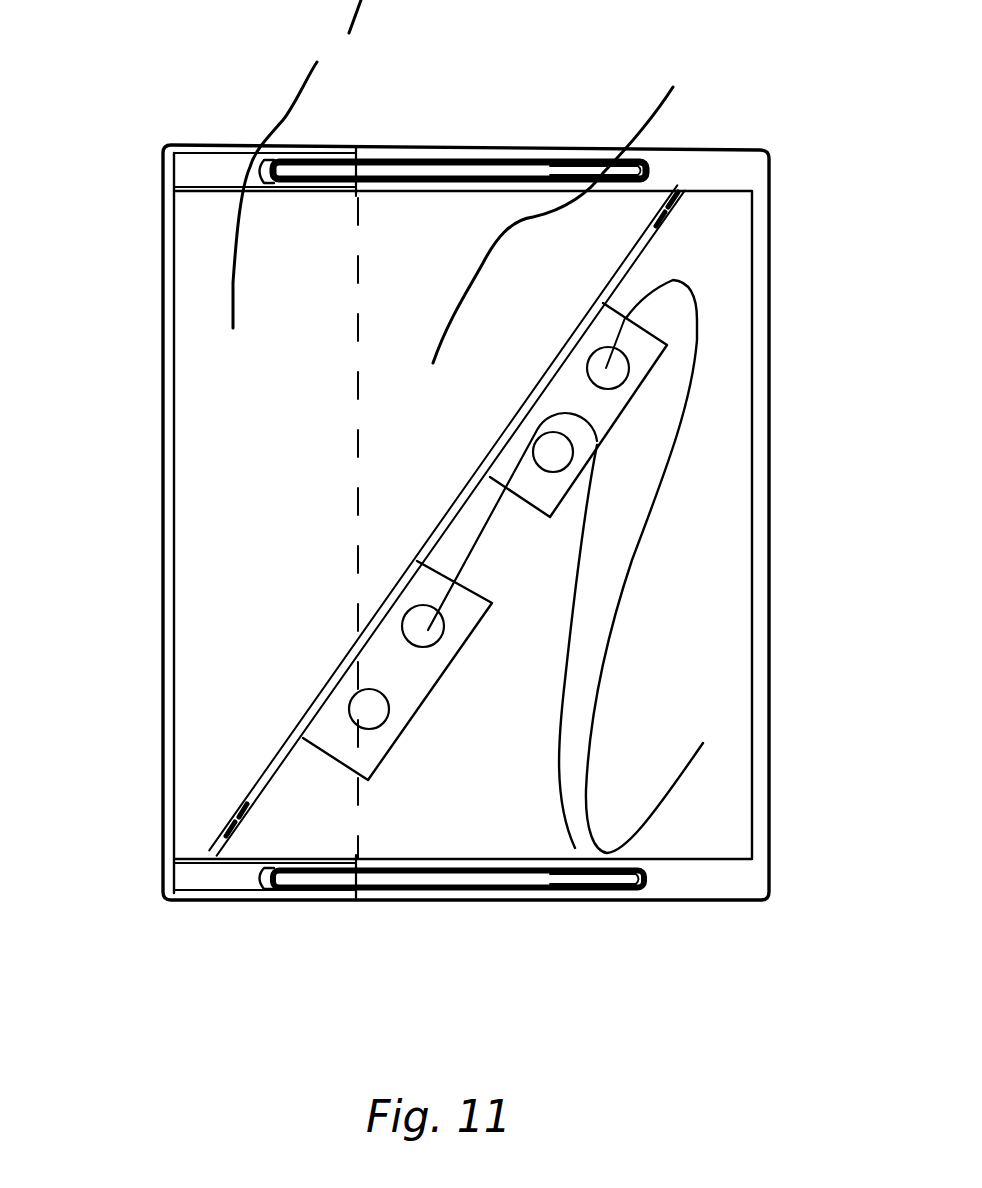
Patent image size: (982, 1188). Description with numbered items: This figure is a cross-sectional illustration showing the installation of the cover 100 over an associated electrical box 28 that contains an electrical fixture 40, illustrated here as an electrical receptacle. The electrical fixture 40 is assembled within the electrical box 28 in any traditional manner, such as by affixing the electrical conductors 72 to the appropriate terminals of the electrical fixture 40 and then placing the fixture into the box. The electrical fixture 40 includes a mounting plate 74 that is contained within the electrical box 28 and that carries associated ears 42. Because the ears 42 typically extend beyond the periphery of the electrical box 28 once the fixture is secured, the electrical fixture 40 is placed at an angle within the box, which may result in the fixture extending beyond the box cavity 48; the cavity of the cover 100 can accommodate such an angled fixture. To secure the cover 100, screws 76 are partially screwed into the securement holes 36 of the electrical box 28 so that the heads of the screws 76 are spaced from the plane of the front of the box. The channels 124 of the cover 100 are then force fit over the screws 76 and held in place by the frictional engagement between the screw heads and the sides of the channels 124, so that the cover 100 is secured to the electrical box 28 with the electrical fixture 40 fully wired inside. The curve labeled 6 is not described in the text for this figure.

The latch actuator cable 6 is at (279, 164).
The electrical box 28 is at (771, 452).
The securement holes 36 is at (574, 165).
The electrical fixture 40 is at (418, 704).
The ears 42 is at (683, 206).
The box cavity 48 is at (567, 203).
The electrical conductors 72 is at (563, 703).
The mounting plate 74 is at (628, 264).
The screws 76 is at (452, 166).
The cover 100 is at (159, 876).
The channels 124 is at (210, 173).